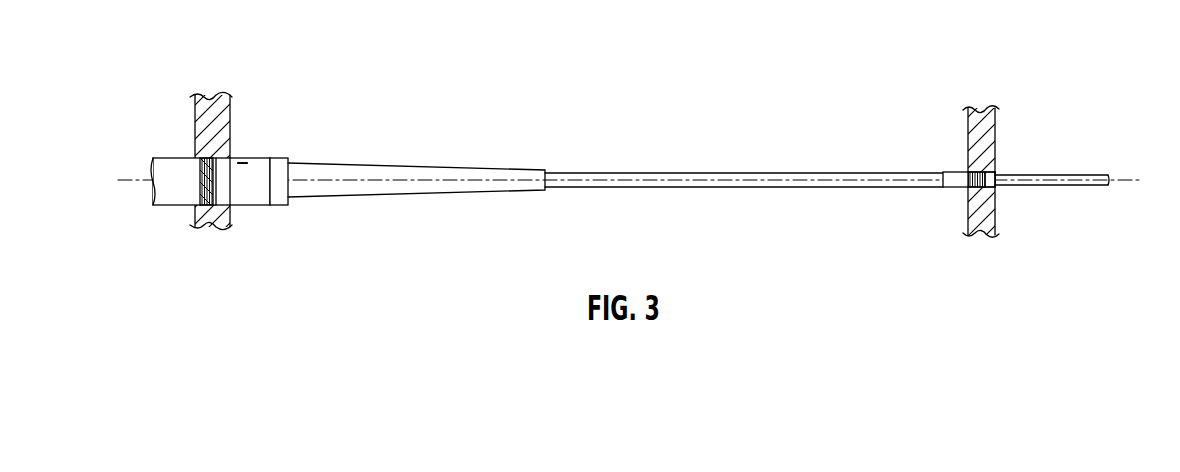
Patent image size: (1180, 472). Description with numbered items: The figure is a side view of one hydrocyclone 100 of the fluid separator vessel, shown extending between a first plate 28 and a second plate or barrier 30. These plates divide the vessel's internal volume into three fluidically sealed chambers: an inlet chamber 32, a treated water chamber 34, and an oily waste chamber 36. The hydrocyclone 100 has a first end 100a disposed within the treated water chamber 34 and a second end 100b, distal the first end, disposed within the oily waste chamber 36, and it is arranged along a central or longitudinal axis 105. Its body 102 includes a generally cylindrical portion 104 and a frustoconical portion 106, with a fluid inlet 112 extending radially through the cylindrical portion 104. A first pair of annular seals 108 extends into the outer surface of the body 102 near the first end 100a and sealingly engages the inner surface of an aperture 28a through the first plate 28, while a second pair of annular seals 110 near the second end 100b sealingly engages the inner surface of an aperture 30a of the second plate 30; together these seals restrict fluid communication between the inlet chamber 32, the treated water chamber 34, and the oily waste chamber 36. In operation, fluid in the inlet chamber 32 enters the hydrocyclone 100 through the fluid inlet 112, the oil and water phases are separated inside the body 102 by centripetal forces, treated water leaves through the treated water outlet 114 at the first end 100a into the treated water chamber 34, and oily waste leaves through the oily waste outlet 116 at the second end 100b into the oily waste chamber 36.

The first plate 28 is at (990, 125).
The aperture of first plate 28a is at (992, 172).
The second plate or barrier 30 is at (217, 108).
The aperture of second plate 30a is at (230, 158).
The inlet chamber 32 is at (615, 148).
The treated water chamber 34 is at (1025, 145).
The oily waste chamber 36 is at (198, 154).
The hydrocyclone 100 is at (615, 177).
The first end 100a is at (1108, 180).
The second end 100b is at (152, 159).
The body 102 is at (705, 181).
The cylindrical portion 104 is at (263, 197).
The central or longitudinal axis 105 is at (1023, 187).
The frustoconical portion 106 is at (436, 171).
The first pair of annular seals 108 is at (969, 182).
The second pair of annular seals 110 is at (197, 158).
The fluid inlet 112 is at (242, 158).
The treated water outlet 114 is at (1108, 185).
The oily waste outlet 116 is at (153, 190).